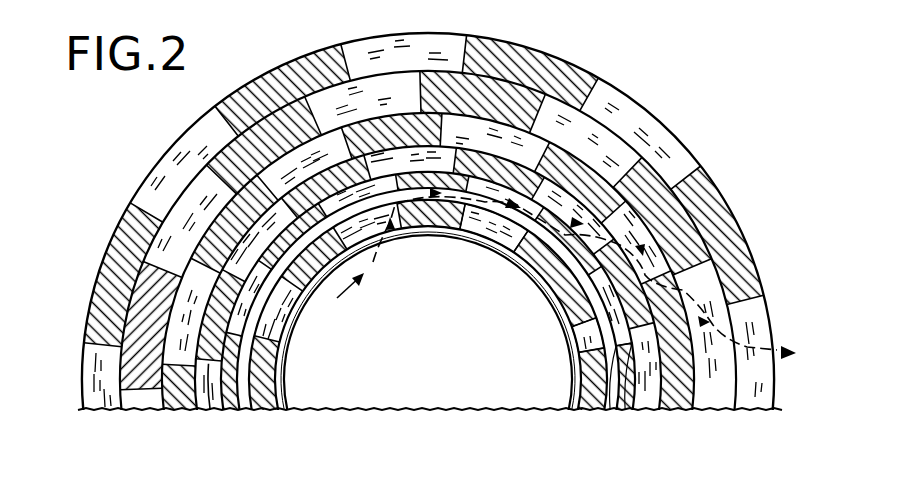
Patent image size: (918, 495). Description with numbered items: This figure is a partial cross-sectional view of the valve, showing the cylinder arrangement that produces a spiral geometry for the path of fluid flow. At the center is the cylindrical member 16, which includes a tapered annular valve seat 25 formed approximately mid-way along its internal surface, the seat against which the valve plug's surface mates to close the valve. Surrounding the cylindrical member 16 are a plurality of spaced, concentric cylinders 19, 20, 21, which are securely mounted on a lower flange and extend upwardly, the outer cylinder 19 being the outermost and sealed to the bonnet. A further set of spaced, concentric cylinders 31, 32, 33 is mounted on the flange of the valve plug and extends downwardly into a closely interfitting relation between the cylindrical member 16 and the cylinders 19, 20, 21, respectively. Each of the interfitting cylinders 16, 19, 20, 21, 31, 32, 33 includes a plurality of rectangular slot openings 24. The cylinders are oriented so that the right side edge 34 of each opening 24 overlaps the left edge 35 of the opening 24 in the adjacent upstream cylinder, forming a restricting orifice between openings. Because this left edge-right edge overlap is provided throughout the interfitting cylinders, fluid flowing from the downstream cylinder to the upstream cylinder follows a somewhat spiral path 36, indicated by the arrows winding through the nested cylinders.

The cylindrical member 16 is at (267, 400).
The outer cylinder 19 is at (270, 76).
The cylinder 20 is at (177, 400).
The cylinder 21 is at (233, 400).
The slot openings 24 is at (597, 90).
The tapered annular valve seat 25 is at (428, 231).
The cylinder 31 is at (135, 388).
The cylinder 32 is at (210, 397).
The cylinder 33 is at (253, 322).
The right side edge 34 is at (421, 82).
The left edge 35 is at (343, 53).
The spiral path 36 is at (350, 290).